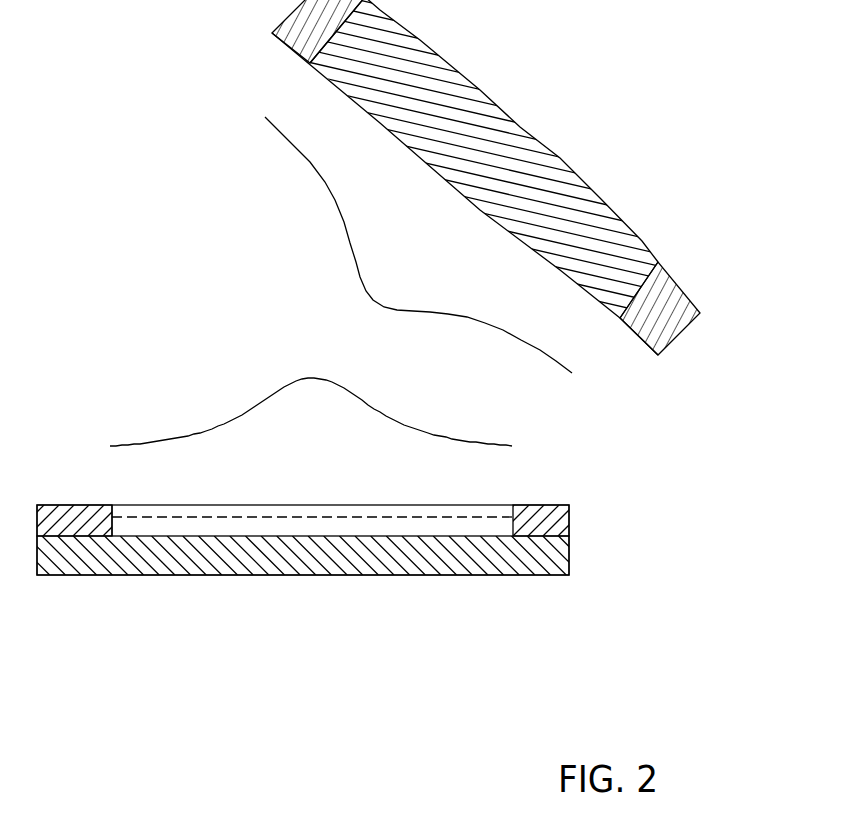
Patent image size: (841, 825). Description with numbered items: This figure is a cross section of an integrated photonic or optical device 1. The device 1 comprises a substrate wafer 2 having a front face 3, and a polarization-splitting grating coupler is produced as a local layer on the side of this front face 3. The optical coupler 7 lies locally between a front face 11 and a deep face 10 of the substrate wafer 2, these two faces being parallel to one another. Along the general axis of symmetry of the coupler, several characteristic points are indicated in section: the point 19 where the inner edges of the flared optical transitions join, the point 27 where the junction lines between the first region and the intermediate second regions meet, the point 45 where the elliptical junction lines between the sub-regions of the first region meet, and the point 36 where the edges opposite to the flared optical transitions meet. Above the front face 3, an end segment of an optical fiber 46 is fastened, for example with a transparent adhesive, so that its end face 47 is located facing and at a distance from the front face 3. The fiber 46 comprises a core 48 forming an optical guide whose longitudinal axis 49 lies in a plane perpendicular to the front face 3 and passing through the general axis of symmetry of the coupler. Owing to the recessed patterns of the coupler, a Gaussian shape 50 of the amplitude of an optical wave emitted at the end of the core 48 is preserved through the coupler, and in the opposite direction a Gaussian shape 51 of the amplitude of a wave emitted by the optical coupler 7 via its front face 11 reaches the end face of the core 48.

The integrated photonic or optical device 1 is at (84, 464).
The substrate wafer 2 is at (580, 505).
The front face 3 is at (63, 497).
The optical coupler 7 is at (450, 525).
The deep face 10 is at (347, 537).
The front face 11 is at (418, 497).
The point 19 is at (112, 505).
The point 27 is at (215, 505).
The point 36 is at (513, 505).
The point 45 is at (267, 505).
The optical fiber 46 is at (683, 291).
The end face 47 is at (377, 120).
The core 48 is at (567, 166).
The longitudinal axis 49 is at (485, 188).
The Gaussian shape 50 is at (334, 201).
The Gaussian shape 51 is at (217, 427).